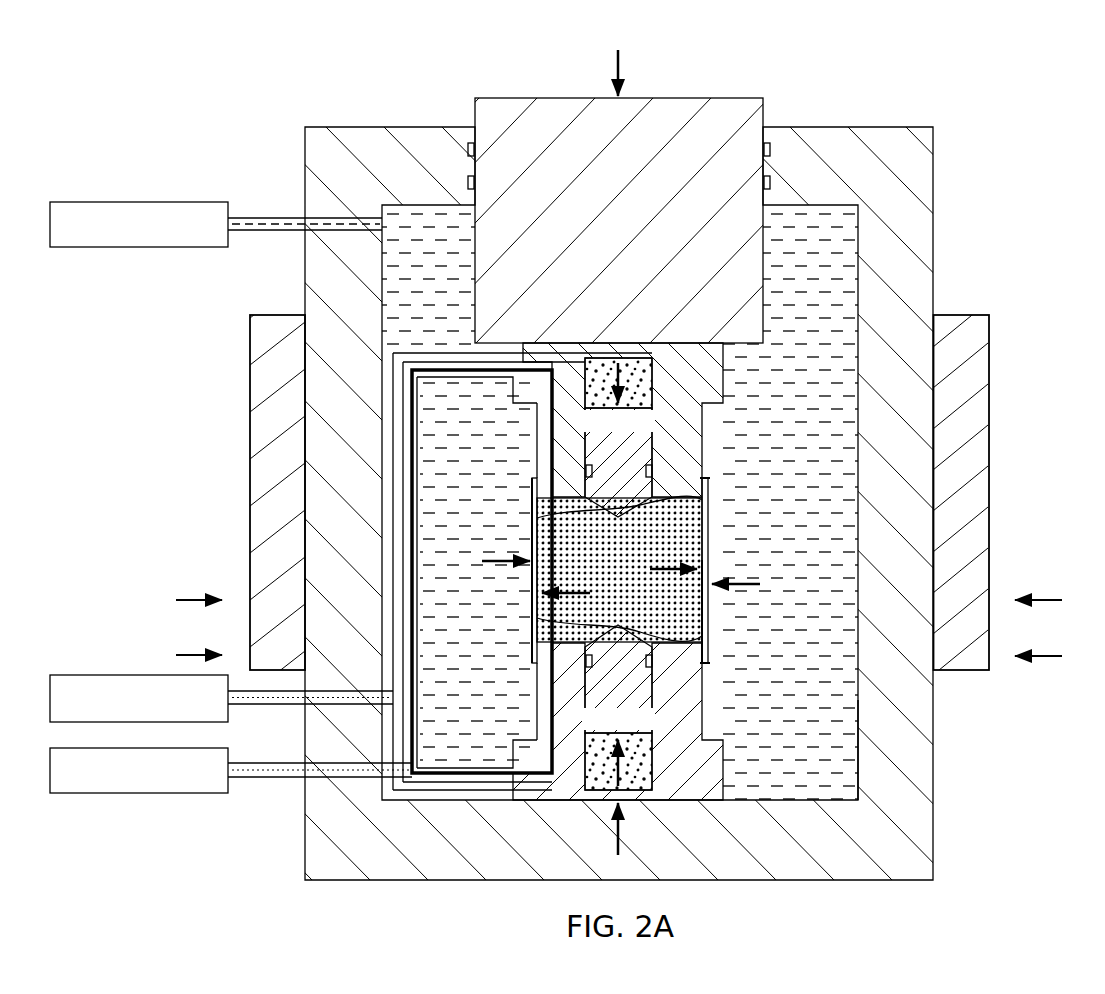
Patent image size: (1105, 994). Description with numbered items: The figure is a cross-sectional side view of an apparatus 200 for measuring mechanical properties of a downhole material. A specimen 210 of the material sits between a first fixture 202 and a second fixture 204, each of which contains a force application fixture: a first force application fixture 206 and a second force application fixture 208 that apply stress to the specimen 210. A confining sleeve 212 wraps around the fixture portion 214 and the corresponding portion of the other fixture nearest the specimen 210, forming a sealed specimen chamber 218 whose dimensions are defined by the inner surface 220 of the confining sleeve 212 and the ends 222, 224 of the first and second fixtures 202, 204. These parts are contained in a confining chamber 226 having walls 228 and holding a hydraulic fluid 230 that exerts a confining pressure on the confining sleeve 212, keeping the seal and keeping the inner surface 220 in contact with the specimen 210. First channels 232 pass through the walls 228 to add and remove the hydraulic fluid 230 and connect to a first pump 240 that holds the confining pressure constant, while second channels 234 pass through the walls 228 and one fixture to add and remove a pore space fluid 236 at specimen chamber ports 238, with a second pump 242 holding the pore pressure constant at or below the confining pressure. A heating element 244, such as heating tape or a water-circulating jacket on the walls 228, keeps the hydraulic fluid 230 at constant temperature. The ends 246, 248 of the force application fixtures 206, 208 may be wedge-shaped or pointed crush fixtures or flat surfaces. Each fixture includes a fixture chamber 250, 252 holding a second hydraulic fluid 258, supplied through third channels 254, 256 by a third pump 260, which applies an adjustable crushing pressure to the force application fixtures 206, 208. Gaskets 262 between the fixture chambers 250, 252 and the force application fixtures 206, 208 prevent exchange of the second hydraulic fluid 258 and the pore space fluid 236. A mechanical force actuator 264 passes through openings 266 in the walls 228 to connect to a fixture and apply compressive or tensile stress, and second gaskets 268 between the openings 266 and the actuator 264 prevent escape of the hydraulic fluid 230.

The apparatus 200 is at (223, 70).
The first fixture 202 is at (513, 398).
The second fixture 204 is at (520, 753).
The first force application fixture 206 is at (655, 460).
The second force application fixture 208 is at (660, 695).
The specimen 210 is at (545, 625).
The confining sleeve 212 is at (533, 652).
The fixture portion 214 is at (710, 483).
The sealed specimen chamber 218 is at (711, 607).
The inner surface 220 is at (545, 533).
The end of first fixture 222 is at (690, 533).
The end of second fixture 224 is at (704, 592).
The confining chamber 226 is at (866, 755).
The walls 228 is at (348, 127).
The hydraulic fluid 230 is at (264, 231).
The first channels 232 is at (282, 218).
The second channels 234 is at (282, 706).
The pore space fluid 236 is at (546, 450).
The specimen chamber ports 238 is at (535, 520).
The first pump 240 is at (142, 202).
The second pump 242 is at (72, 675).
The heating element 244 is at (252, 350).
The end of first force application fixture 246 is at (660, 540).
The end of second force application fixture 248 is at (537, 610).
The fixture chamber of first fixture 250 is at (648, 366).
The fixture chamber of second fixture 252 is at (655, 770).
The third channel 254 is at (448, 353).
The third channel 256 is at (425, 792).
The second hydraulic fluid 258 is at (391, 462).
The third pump 260 is at (140, 795).
The gaskets 262 is at (655, 485).
The mechanical force actuator 264 is at (678, 98).
The openings 266 is at (470, 121).
The second gaskets 268 is at (770, 149).